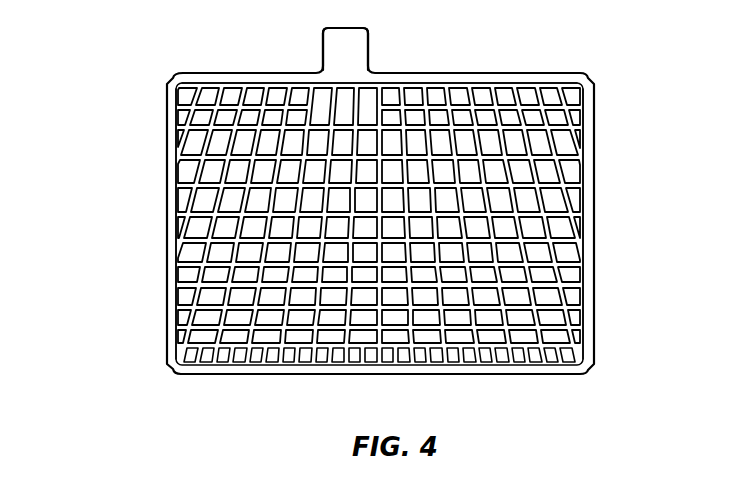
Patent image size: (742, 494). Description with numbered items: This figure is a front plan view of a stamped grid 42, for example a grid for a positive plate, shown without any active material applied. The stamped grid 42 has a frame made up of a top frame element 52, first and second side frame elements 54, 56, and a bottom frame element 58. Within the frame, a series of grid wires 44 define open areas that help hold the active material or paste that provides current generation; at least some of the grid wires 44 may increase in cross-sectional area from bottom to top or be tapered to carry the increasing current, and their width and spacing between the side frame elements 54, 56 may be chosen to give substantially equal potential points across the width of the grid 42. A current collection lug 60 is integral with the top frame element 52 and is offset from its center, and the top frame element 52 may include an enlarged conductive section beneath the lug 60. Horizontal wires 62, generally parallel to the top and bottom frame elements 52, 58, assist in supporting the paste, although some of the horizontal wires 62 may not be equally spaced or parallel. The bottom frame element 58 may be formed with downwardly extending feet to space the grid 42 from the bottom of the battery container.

The stamped grid 42 is at (617, 128).
The grid wires 44 is at (477, 126).
The top frame element 52 is at (426, 82).
The first side frame element 54 is at (172, 181).
The second side frame element 56 is at (595, 224).
The bottom frame element 58 is at (371, 366).
The current collection lug 60 is at (337, 52).
The horizontal wires 62 is at (269, 305).